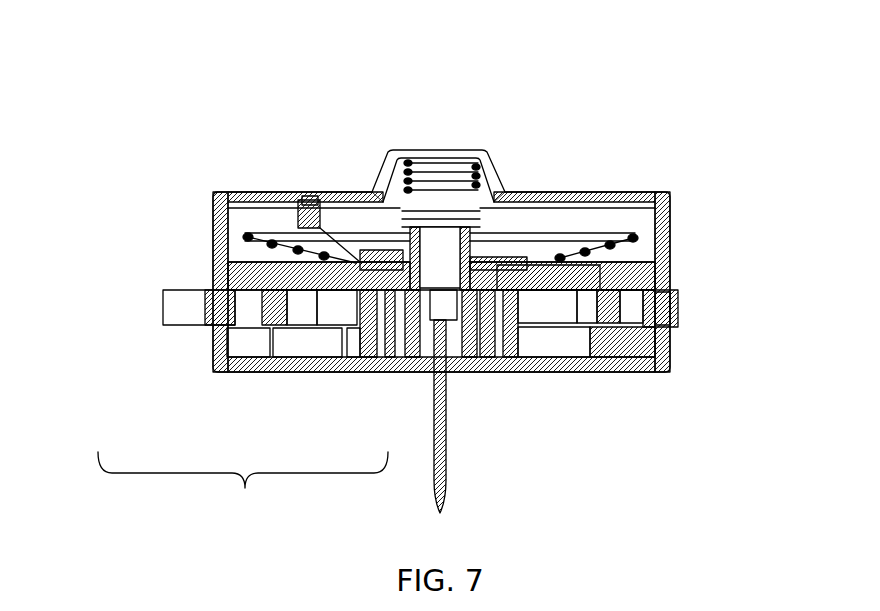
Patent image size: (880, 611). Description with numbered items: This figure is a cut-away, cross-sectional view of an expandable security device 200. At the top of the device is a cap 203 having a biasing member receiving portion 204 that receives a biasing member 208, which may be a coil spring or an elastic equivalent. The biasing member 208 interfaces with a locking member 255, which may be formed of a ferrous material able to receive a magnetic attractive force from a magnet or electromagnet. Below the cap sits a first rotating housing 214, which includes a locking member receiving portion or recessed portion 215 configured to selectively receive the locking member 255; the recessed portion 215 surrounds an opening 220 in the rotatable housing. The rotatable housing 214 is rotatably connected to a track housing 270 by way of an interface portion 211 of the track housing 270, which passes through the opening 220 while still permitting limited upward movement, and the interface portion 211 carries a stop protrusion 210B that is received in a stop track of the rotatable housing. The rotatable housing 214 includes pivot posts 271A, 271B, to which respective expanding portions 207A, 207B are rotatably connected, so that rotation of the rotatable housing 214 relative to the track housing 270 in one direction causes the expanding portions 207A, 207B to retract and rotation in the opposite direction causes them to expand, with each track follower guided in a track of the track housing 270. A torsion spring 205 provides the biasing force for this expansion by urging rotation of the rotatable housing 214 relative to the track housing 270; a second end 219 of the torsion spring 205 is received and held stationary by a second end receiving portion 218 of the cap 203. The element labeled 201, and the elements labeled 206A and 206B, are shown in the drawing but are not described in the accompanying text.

The expandable security device 200 is at (273, 130).
The needle 201 is at (445, 458).
The cap 203 is at (608, 192).
The biasing member receiving portion 204 is at (410, 163).
The torsion spring 205 is at (633, 240).
The spring contact 206A is at (468, 292).
The spring contacts 206B is at (412, 296).
The expanding portion 207A is at (640, 310).
The expanding portion 207B is at (205, 323).
The biasing member 208 is at (465, 165).
The stop protrusion 210B is at (385, 293).
The interface portion 211 is at (243, 492).
The first rotating housing 214 is at (224, 270).
The recessed portion 215 is at (378, 265).
The second end receiving portion 218 is at (300, 205).
The second end 219 is at (298, 212).
The opening 220 is at (655, 263).
The locking member 255 is at (497, 263).
The track housing 270 is at (650, 366).
The pivot post 271A is at (657, 303).
The pivot post 271B is at (250, 307).